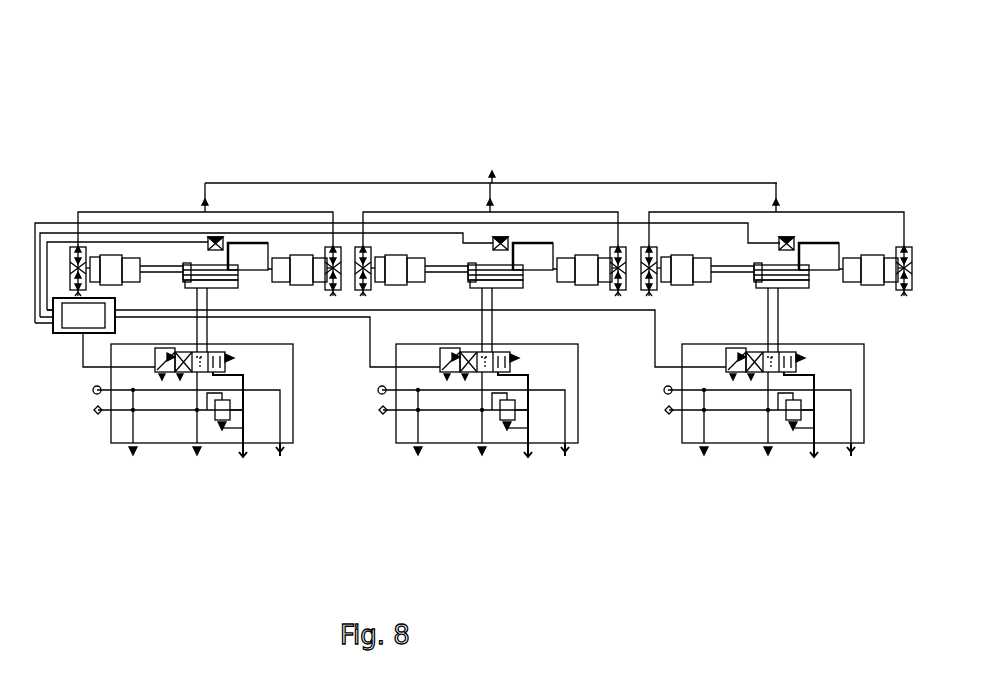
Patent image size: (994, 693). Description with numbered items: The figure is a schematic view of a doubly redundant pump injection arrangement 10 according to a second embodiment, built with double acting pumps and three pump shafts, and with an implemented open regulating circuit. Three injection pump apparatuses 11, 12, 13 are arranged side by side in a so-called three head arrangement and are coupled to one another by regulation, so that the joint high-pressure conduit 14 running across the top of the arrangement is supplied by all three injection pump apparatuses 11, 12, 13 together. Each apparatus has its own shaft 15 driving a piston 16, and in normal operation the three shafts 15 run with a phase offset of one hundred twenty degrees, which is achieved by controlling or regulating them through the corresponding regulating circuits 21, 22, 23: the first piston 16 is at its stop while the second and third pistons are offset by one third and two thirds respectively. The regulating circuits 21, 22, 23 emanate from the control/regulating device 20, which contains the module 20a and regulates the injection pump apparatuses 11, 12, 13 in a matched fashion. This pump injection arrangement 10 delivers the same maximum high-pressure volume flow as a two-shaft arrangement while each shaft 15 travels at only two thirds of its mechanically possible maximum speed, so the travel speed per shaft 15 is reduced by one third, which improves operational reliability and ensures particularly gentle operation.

The pump injection arrangement 10 is at (144, 49).
The first injection pump apparatus 11 is at (156, 206).
The second injection pump apparatus 12 is at (627, 201).
The third injection pump apparatus 13 is at (851, 204).
The joint high-pressure conduit 14 is at (489, 181).
The shaft 15 is at (155, 275).
The piston 16 is at (189, 269).
The control/regulating device 20 is at (58, 334).
The controller module 20a is at (101, 325).
The regulating circuit 21 is at (83, 367).
The regulating circuit 22 is at (370, 363).
The regulating circuit 23 is at (75, 226).